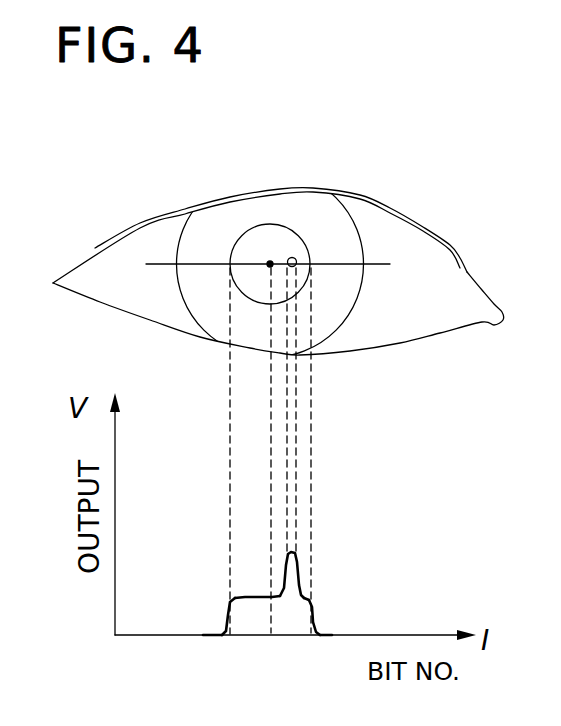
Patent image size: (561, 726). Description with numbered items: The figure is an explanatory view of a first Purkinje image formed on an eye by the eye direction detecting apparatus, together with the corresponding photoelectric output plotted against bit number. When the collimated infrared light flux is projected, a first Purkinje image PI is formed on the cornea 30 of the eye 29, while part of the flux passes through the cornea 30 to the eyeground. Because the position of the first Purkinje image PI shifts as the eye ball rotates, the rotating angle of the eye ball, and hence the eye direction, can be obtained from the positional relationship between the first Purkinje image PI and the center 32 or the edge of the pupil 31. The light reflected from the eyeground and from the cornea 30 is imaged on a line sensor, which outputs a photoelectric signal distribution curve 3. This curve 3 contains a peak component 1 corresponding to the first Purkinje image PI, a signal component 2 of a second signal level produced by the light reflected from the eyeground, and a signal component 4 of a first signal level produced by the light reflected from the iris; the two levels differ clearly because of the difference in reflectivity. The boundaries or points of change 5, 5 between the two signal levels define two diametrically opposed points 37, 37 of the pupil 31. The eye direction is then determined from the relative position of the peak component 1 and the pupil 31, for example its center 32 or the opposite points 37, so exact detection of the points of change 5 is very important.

The eye 29 is at (278, 184).
The cornea 30 is at (207, 223).
The pupil 31 is at (284, 228).
The center of the pupil 32 is at (270, 264).
The first Purkinje image PI is at (312, 262).
The diametrically opposed points of the pupil 37 is at (220, 263).
The peak component 1 is at (300, 560).
The signal component corresponding to light flux reflected from the eyeground 2 is at (220, 527).
The photoelectric signal distribution curve 3 is at (368, 558).
The signal component corresponding to reflection light flux from the iris 4 is at (271, 665).
The boundaries (points of change) 5 is at (228, 626).